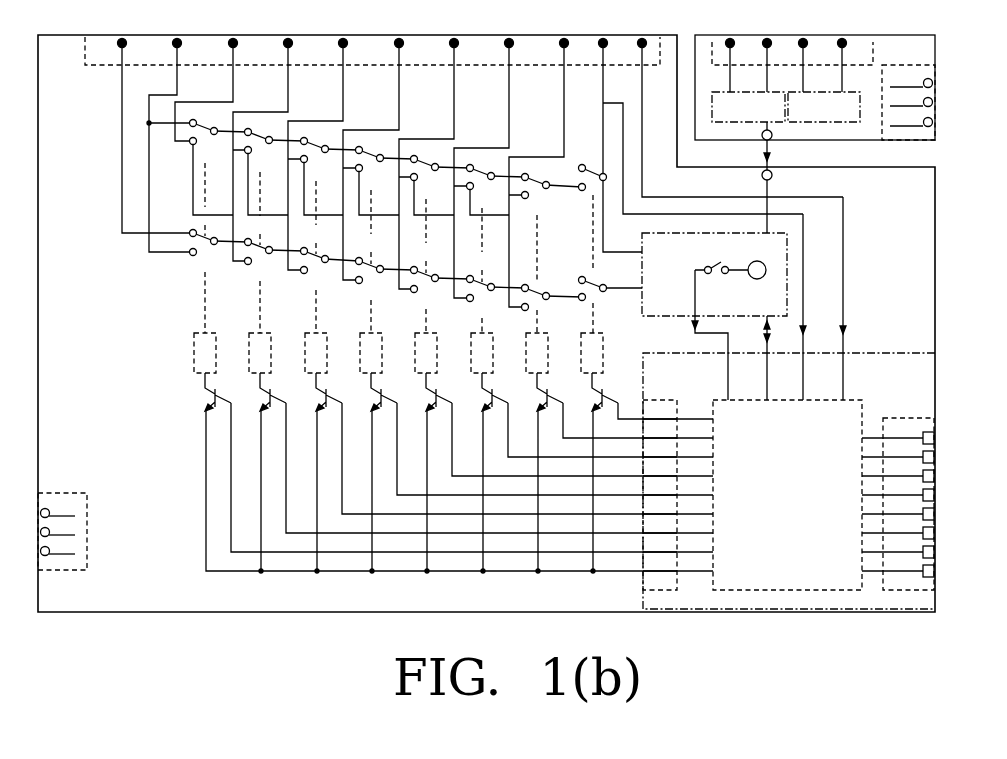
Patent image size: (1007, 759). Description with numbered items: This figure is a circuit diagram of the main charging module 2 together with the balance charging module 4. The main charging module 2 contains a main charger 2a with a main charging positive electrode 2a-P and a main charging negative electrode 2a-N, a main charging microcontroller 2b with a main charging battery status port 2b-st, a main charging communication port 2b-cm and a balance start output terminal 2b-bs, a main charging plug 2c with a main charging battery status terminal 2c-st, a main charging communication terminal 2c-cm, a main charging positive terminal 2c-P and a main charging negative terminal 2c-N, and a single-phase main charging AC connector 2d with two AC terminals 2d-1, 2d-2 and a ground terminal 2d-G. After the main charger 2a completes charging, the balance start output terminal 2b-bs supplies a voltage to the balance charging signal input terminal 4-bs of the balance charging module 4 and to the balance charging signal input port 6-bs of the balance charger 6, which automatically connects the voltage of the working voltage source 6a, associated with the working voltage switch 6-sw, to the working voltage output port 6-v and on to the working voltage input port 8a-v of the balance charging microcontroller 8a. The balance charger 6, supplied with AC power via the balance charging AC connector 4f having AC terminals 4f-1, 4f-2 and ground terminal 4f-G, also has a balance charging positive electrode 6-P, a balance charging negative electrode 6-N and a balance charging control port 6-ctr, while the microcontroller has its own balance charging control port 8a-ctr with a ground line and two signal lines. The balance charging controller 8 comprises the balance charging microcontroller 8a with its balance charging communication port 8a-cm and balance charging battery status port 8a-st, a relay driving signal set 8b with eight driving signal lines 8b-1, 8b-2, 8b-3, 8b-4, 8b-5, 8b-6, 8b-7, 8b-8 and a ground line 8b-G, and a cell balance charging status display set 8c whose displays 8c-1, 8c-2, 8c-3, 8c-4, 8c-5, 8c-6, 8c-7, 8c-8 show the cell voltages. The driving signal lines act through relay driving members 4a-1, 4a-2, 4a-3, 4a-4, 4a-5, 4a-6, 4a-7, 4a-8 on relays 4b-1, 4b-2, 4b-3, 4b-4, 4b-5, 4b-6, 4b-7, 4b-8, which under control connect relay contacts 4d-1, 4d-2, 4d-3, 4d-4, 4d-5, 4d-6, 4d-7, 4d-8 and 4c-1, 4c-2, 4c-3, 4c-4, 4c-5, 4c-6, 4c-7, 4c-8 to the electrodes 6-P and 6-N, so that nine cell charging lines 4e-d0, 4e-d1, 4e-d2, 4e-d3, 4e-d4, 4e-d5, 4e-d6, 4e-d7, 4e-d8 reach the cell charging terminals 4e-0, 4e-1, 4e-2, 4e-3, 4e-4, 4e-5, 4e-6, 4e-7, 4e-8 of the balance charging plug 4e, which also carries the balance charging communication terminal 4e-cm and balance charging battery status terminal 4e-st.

The main charging module 2 is at (695, 35).
The main charger 2a is at (860, 92).
The main charging positive electrode 2a-P is at (803, 112).
The main charging negative electrode 2a-N is at (840, 112).
The main charging microcontroller 2b is at (712, 92).
The main charging battery status port 2b-st is at (729, 105).
The main charging communication port 2b-cm is at (764, 105).
The balance start output terminal 2b-bs is at (752, 131).
The main charging plug 2c is at (784, 54).
The main charging battery status terminal 2c-st is at (742, 66).
The main charging communication terminal 2c-cm is at (782, 66).
The main charging positive terminal 2c-P is at (813, 66).
The main charging negative terminal 2c-N is at (853, 66).
The main charging AC connector 2d is at (882, 65).
The AC terminal 2d-1 is at (911, 80).
The AC terminal 2d-2 is at (911, 99).
The ground terminal 2d-G is at (911, 119).
The balance charging module 4 is at (38, 35).
The balance charging signal input terminal 4-bs is at (753, 186).
The balance charging plug 4e is at (85, 65).
The cell charging terminal 4e-0 is at (110, 52).
The cell charging terminal 4e-1 is at (165, 52).
The cell charging terminal 4e-2 is at (221, 52).
The cell charging terminal 4e-3 is at (276, 52).
The cell charging terminal 4e-4 is at (331, 52).
The cell charging terminal 4e-5 is at (387, 52).
The cell charging terminal 4e-6 is at (442, 52).
The cell charging terminal 4e-7 is at (497, 52).
The cell charging terminal 4e-8 is at (552, 52).
The balance charging battery status terminal 4e-st is at (688, 146).
The balance charging communication terminal 4e-cm is at (725, 118).
The cell charging line 4e-d0 is at (141, 140).
The cell charging line 4e-d1 is at (168, 149).
The cell charging line 4e-d2 is at (204, 94).
The cell charging line 4e-d3 is at (260, 154).
The cell charging line 4e-d4 is at (315, 158).
The cell charging line 4e-d5 is at (371, 163).
The cell charging line 4e-d6 is at (426, 168).
The cell charging line 4e-d7 is at (481, 172).
The cell charging line 4e-d8 is at (536, 177).
The relay contact 4d-1 is at (593, 179).
The relay contact 4d-2 is at (216, 162).
The relay contact 4d-3 is at (271, 167).
The relay contact 4d-4 is at (327, 171).
The relay contact 4d-5 is at (382, 176).
The relay contact 4d-6 is at (437, 180).
The relay contact 4d-7 is at (493, 185).
The relay contact 4d-8 is at (549, 186).
The relay contact 4c-1 is at (606, 290).
The relay contact 4c-2 is at (216, 243).
The relay contact 4c-3 is at (271, 252).
The relay contact 4c-4 is at (327, 261).
The relay contact 4c-5 is at (382, 271).
The relay contact 4c-6 is at (437, 280).
The relay contact 4c-7 is at (493, 289).
The relay contact 4c-8 is at (549, 298).
The relay 4b-1 is at (592, 284).
The relay 4b-2 is at (205, 268).
The relay 4b-3 is at (260, 272).
The relay 4b-4 is at (316, 277).
The relay 4b-5 is at (371, 281).
The relay 4b-6 is at (426, 286).
The relay 4b-7 is at (482, 290).
The relay 4b-8 is at (537, 294).
The relay driving member 4a-1 is at (652, 473).
The relay driving member 4a-2 is at (459, 472).
The relay driving member 4a-3 is at (486, 473).
The relay driving member 4a-4 is at (514, 473).
The relay driving member 4a-5 is at (541, 473).
The relay driving member 4a-6 is at (569, 473).
The relay driving member 4a-7 is at (597, 473).
The relay driving member 4a-8 is at (624, 473).
The balance charging AC connector 4f is at (70, 494).
The AC terminal 4f-1 is at (58, 510).
The AC terminal 4f-2 is at (58, 529).
The ground terminal 4f-G is at (58, 548).
The balance charger 6 is at (642, 233).
The balance charging positive electrode 6-P is at (660, 252).
The balance charging negative electrode 6-N is at (658, 289).
The balance charging signal input port 6-bs is at (764, 243).
The working voltage source 6a is at (748, 268).
The working voltage switch 6-sw is at (721, 276).
The working voltage output port 6-v is at (710, 335).
The balance charging control port 6-ctr is at (765, 351).
The balance charging controller 8 is at (643, 353).
The balance charging microcontroller 8a is at (713, 402).
The working voltage input port 8a-v is at (728, 410).
The balance charging control port 8a-ctr is at (763, 410).
The balance charging battery status port 8a-st is at (801, 315).
The balance charging communication port 8a-cm is at (837, 306).
The relay driving signal set 8b is at (678, 402).
The driving signal line 8b-1 is at (660, 413).
The driving signal line 8b-2 is at (660, 546).
The driving signal line 8b-3 is at (660, 527).
The driving signal line 8b-4 is at (660, 508).
The driving signal line 8b-5 is at (660, 489).
The driving signal line 8b-6 is at (660, 470).
The driving signal line 8b-7 is at (660, 451).
The driving signal line 8b-8 is at (660, 432).
The ground line 8b-G is at (660, 565).
The cell balance charging status display set 8c is at (886, 420).
The display 8c-1 is at (898, 567).
The display 8c-2 is at (898, 548).
The display 8c-3 is at (898, 529).
The display 8c-4 is at (898, 510).
The display 8c-5 is at (898, 491).
The display 8c-6 is at (898, 472).
The display 8c-7 is at (898, 453).
The display 8c-8 is at (898, 434).